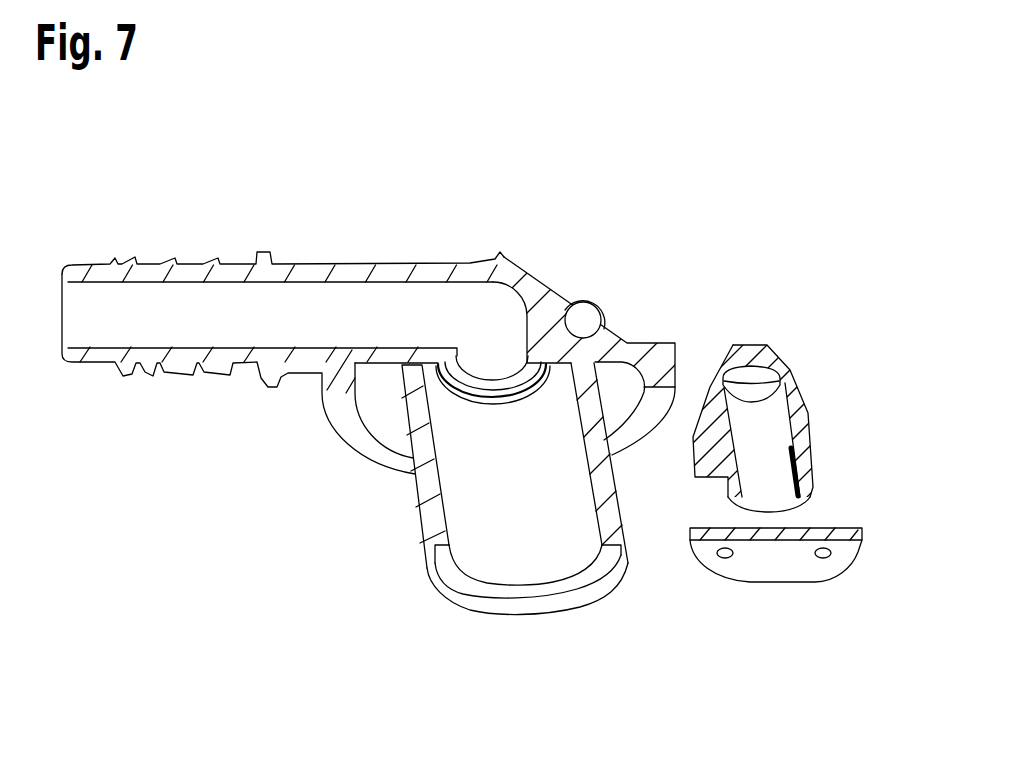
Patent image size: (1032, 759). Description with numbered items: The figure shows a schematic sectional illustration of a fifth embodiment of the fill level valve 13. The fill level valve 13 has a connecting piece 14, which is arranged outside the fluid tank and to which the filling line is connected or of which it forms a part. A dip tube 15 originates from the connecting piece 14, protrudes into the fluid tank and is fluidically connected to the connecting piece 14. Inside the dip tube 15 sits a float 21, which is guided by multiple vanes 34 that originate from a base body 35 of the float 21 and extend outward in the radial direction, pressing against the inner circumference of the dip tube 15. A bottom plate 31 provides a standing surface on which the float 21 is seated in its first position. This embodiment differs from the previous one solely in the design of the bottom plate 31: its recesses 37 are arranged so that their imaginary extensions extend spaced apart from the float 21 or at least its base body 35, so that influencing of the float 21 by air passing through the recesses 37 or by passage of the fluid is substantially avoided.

The fill level valve 13 is at (679, 241).
The connecting piece 14 is at (196, 262).
The dip tube 15 is at (430, 487).
The float 21 is at (516, 379).
The bottom plate 31 is at (806, 595).
The vanes 34 is at (703, 395).
The base body 35 is at (802, 413).
The recesses 37 is at (724, 560).